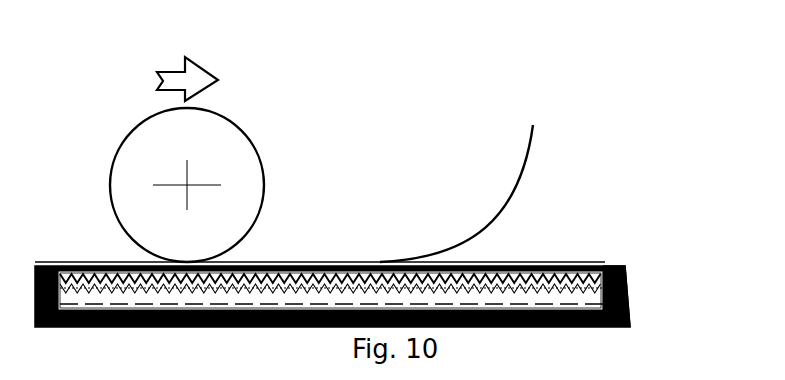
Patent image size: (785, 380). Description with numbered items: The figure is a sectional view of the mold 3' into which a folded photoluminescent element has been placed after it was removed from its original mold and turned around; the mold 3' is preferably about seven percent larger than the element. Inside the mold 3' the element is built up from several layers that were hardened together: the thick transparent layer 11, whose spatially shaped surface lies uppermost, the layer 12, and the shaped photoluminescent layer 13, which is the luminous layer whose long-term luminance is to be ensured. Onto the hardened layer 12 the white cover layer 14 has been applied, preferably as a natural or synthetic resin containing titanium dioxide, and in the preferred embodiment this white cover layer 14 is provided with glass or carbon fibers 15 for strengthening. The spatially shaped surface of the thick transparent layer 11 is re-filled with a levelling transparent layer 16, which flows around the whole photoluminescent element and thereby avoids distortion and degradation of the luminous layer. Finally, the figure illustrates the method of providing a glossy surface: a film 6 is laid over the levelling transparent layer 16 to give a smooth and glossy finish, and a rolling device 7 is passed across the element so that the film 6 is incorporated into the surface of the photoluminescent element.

The film 6 is at (523, 180).
The rolling device 7 is at (237, 143).
The glass or carbon fibers 15 is at (558, 302).
The levelling transparent layer 16 is at (583, 267).
The thick transparent layer 11 is at (598, 275).
The photoluminescent layer 13 is at (595, 288).
The layer 12 is at (601, 268).
The mold 3' is at (405, 276).
The white cover layer 14 is at (631, 290).